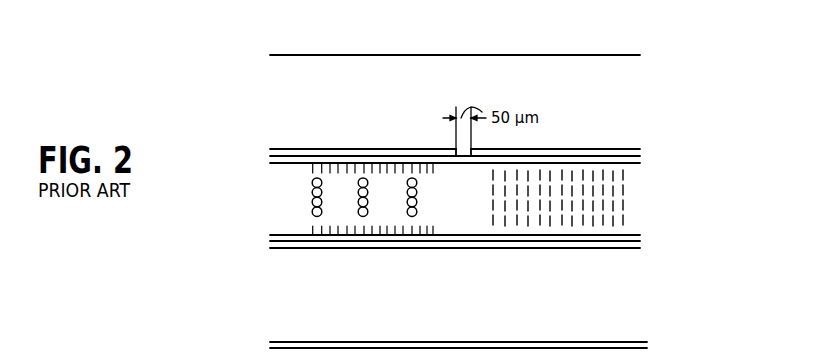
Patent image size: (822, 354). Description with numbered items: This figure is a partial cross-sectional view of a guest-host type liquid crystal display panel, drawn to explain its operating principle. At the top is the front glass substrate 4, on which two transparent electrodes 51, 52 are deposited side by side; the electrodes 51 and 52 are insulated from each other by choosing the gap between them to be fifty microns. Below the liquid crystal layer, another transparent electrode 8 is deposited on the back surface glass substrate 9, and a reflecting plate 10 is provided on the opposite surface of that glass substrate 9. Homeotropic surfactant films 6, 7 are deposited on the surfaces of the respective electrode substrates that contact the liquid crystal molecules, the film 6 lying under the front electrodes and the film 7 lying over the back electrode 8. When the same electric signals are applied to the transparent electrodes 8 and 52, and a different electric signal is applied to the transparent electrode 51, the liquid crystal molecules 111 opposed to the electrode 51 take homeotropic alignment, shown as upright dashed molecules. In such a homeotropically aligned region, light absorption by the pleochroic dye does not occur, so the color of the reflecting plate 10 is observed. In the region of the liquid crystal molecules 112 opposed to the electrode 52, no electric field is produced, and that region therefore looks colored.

The front glass substrate 4 is at (503, 58).
The transparent electrode 52 is at (310, 149).
The transparent electrode 51 is at (612, 150).
The homeotropic surfactant film 6 is at (642, 163).
The liquid crystal molecules 111 is at (628, 198).
The liquid crystal molecules 112 is at (310, 194).
The homeotropic surfactant film 7 is at (641, 239).
The transparent electrode 8 is at (642, 248).
The back surface glass substrate 9 is at (622, 305).
The reflecting plate 10 is at (647, 343).